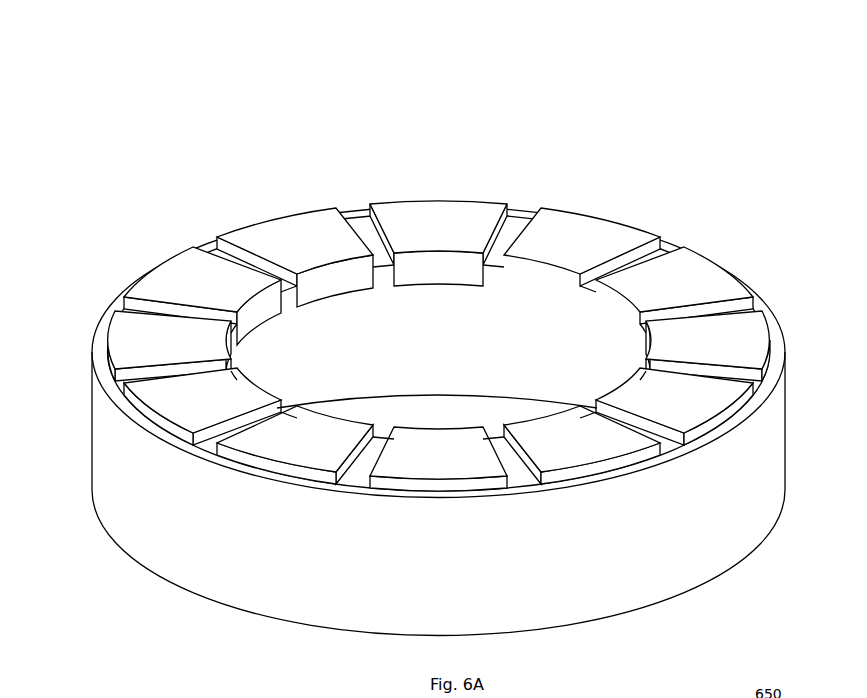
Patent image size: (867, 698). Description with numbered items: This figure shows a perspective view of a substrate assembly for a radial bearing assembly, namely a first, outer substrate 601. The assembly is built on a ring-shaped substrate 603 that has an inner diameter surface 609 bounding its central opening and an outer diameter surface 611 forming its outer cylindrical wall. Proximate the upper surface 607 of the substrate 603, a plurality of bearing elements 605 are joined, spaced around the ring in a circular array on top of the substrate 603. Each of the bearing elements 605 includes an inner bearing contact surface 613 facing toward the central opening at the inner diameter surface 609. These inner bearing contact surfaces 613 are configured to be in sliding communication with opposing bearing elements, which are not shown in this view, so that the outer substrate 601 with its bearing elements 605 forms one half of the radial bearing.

The outer substrate 601 is at (453, 321).
The substrate 603 is at (785, 427).
The bearing elements 605 is at (582, 238).
The upper surface 607 is at (665, 245).
The inner diameter surface 609 is at (316, 337).
The outer diameter surface 611 is at (110, 461).
The inner bearing contact surfaces 613 is at (258, 307).